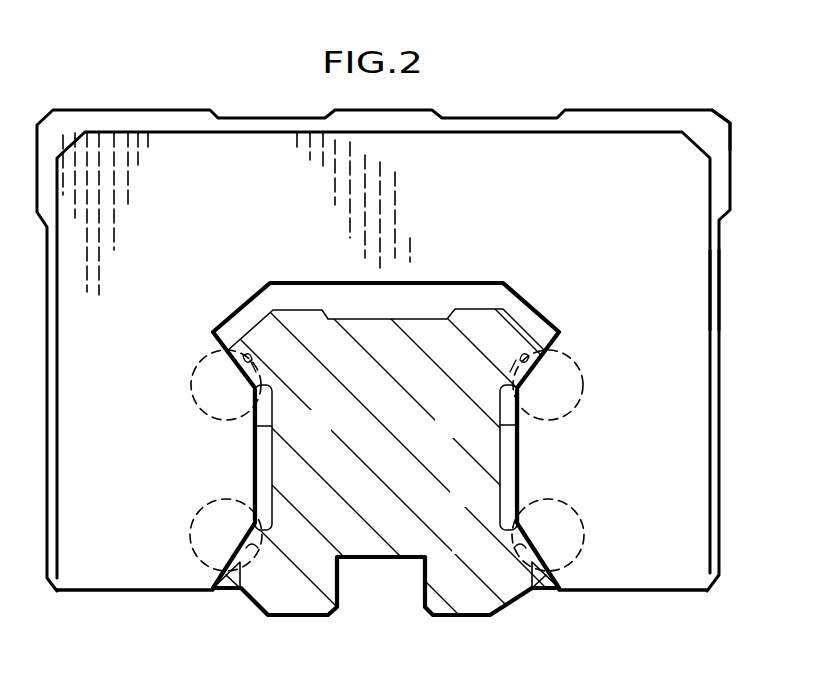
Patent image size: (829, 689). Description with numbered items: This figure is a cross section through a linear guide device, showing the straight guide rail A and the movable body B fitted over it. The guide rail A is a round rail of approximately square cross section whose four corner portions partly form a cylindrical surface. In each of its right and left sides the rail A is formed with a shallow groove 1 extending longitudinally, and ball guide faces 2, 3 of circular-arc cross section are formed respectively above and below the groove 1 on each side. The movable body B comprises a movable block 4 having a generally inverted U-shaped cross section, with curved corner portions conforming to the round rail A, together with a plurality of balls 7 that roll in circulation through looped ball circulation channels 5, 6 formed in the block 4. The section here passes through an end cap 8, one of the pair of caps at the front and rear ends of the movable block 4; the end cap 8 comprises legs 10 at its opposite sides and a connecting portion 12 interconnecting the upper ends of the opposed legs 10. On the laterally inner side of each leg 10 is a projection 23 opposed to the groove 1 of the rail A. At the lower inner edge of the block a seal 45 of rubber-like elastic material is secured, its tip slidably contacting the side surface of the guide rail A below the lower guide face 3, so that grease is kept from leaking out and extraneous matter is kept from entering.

The groove 1 is at (256, 457).
The ball guide face 2 is at (250, 358).
The ball guide face 3 is at (244, 556).
The movable block 4 is at (488, 119).
The ball circulation channel 5 is at (197, 398).
The ball circulation channel 6 is at (200, 513).
The ball 7 is at (256, 369).
The end cap 8 is at (698, 285).
The leg 10 is at (102, 577).
The connecting portion 12 is at (300, 148).
The projection 23 is at (272, 426).
The seal 45 is at (226, 592).
The guide rail A is at (418, 475).
The movable body B is at (724, 120).